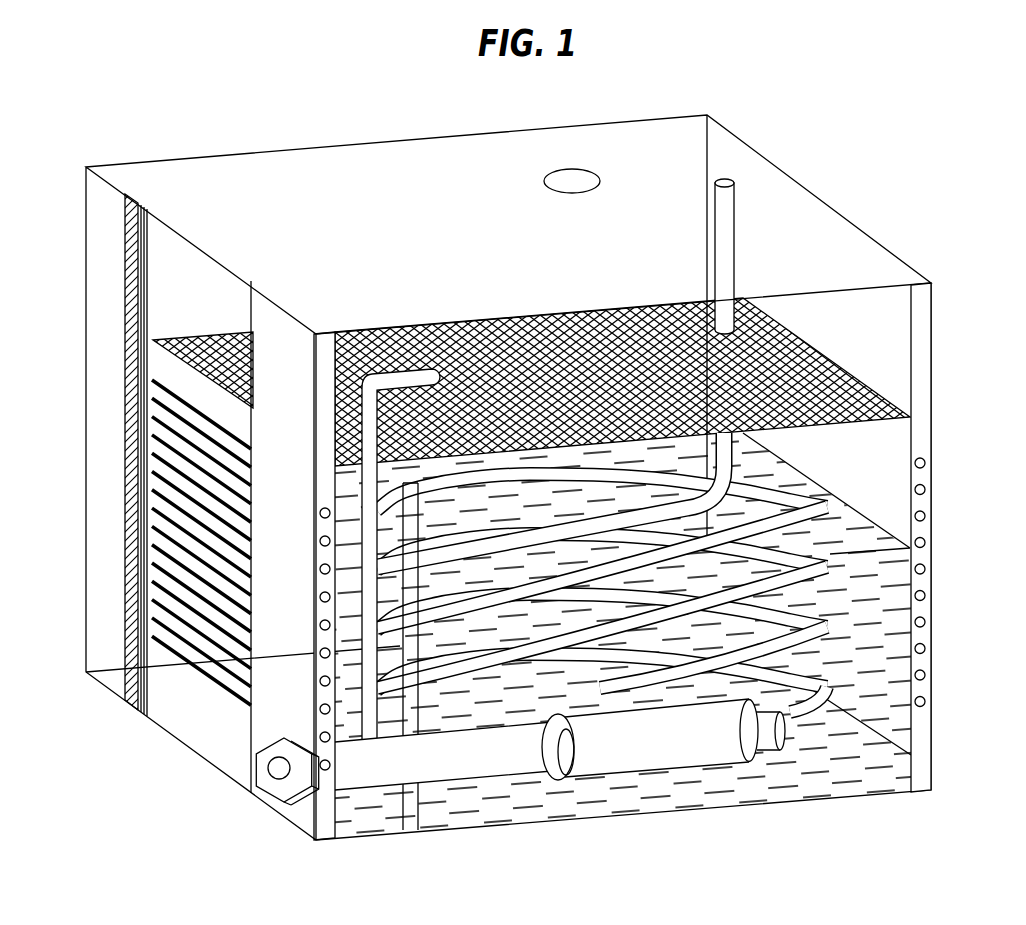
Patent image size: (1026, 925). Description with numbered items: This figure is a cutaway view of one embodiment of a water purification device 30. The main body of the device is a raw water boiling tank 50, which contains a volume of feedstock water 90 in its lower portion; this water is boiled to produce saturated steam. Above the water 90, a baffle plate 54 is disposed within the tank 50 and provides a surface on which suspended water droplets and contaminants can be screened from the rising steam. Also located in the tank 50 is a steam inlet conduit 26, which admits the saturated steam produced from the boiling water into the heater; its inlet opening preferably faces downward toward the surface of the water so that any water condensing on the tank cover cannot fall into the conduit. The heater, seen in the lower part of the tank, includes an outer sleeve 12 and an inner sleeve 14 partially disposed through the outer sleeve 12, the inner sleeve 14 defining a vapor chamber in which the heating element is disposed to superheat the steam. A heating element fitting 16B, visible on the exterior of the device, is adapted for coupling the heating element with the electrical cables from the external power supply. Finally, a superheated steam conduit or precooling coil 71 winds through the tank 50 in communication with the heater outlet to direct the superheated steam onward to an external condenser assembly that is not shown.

The water purification device 30 is at (254, 133).
The steam inlet conduit 26 is at (400, 382).
The raw water boiling tank 50 is at (922, 337).
The baffle plate 54 is at (887, 385).
The precooling coil 71 is at (905, 659).
The water 90 is at (877, 708).
The heating element fitting 16B is at (280, 773).
The inner sleeve 14 is at (463, 758).
The outer sleeve 12 is at (650, 752).